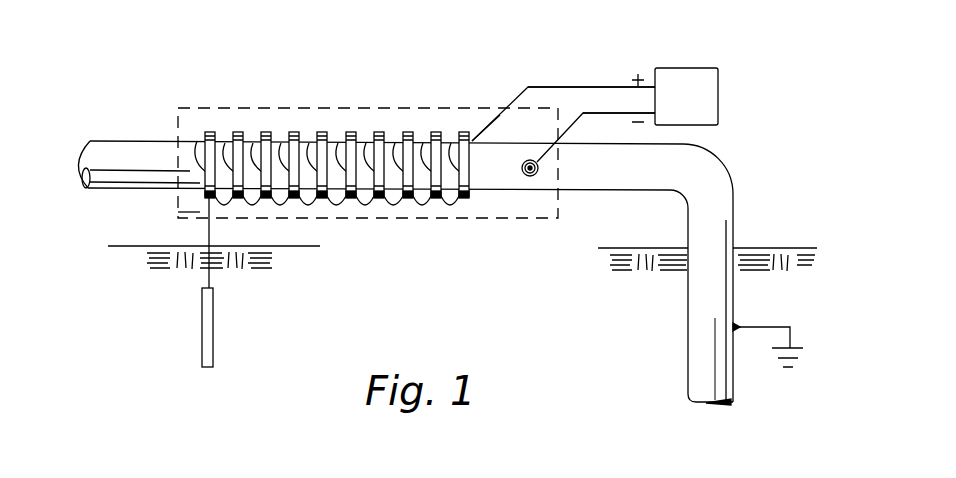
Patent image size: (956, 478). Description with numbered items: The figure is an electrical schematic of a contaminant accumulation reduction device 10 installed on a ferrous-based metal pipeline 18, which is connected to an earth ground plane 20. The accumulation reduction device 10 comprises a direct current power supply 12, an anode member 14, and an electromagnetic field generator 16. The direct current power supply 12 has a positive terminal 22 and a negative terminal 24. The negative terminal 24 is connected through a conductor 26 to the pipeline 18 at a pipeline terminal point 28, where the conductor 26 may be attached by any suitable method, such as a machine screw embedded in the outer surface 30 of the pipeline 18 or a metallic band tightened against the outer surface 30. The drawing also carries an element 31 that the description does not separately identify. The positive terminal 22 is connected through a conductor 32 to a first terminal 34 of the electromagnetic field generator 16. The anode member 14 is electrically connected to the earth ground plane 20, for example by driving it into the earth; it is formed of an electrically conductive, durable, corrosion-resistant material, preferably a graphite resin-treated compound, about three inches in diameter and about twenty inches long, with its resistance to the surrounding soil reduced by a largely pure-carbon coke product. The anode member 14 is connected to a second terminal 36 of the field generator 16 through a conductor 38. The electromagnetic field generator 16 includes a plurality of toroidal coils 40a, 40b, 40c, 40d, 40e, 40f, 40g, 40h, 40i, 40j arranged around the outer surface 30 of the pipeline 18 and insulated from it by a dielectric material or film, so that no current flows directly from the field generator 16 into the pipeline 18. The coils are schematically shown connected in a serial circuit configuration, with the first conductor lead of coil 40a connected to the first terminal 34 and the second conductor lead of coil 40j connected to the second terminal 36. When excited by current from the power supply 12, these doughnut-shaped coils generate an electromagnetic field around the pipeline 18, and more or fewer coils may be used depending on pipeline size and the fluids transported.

The contaminant accumulation reduction device 10 is at (130, 72).
The direct current power supply 12 is at (718, 80).
The anode member 14 is at (213, 330).
The electromagnetic field generator 16 is at (558, 220).
The ferrous-based metal pipeline 18 is at (693, 390).
The earth ground plane 20 is at (158, 265).
The positive terminal 22 is at (613, 87).
The negative terminal 24 is at (597, 113).
The conductor 26 is at (572, 120).
The pipeline terminal point 28 is at (540, 176).
The outer surface 30 is at (688, 345).
The pipe end tip 31 is at (723, 407).
The conductor 32 is at (535, 87).
The first terminal 34 is at (480, 141).
The second terminal 36 is at (200, 212).
The conductor 38 is at (211, 233).
The toroidal coil 40a is at (198, 140).
The toroidal coil 40b is at (246, 140).
The toroidal coil 40c is at (277, 140).
The toroidal coil 40d is at (306, 140).
The toroidal coil 40e is at (333, 140).
The toroidal coil 40f is at (362, 140).
The toroidal coil 40g is at (391, 140).
The toroidal coil 40h is at (400, 200).
The toroidal coil 40i is at (425, 203).
The toroidal coil 40j is at (452, 200).